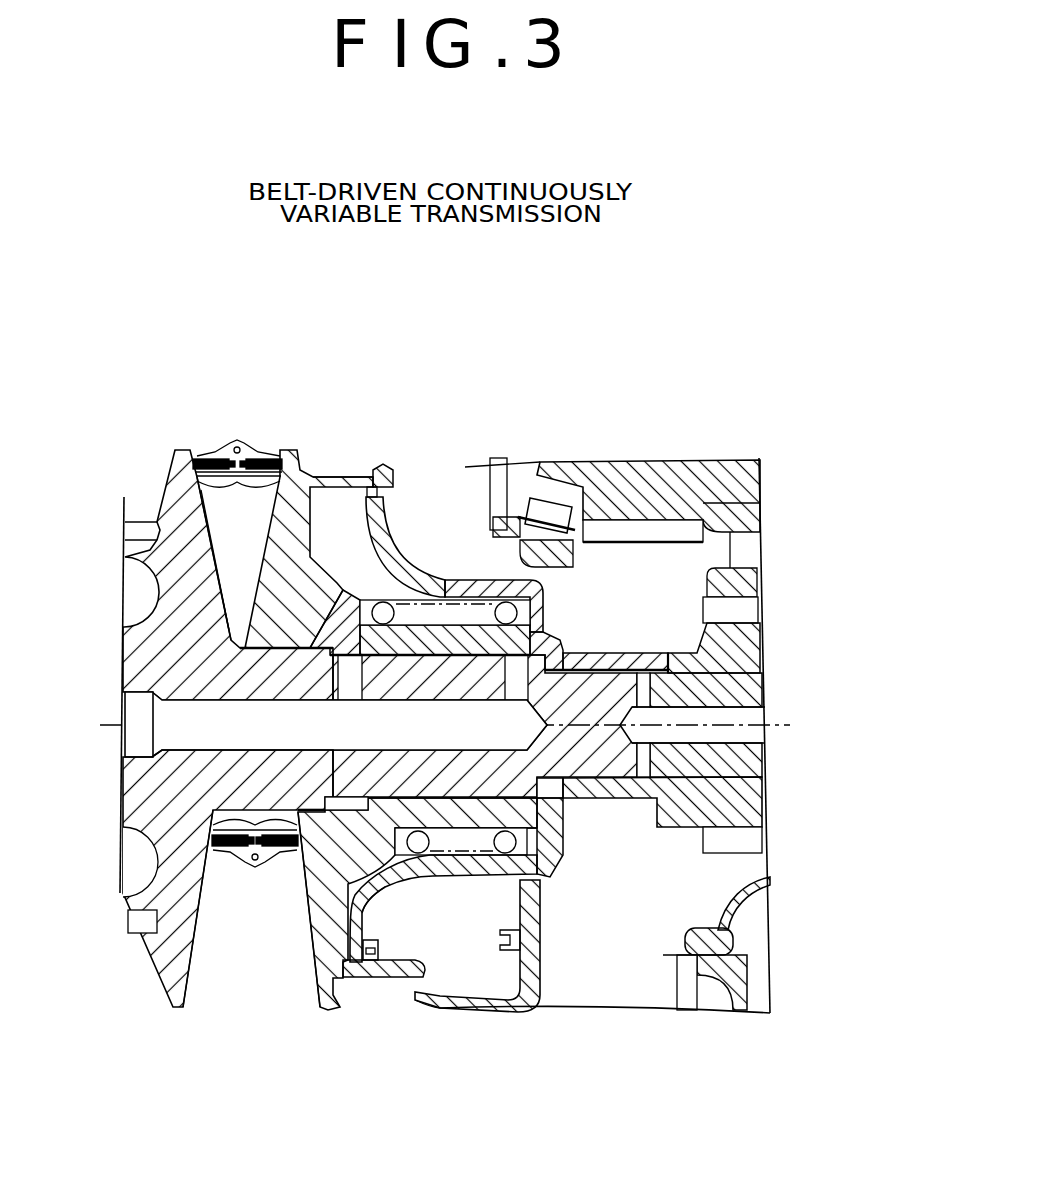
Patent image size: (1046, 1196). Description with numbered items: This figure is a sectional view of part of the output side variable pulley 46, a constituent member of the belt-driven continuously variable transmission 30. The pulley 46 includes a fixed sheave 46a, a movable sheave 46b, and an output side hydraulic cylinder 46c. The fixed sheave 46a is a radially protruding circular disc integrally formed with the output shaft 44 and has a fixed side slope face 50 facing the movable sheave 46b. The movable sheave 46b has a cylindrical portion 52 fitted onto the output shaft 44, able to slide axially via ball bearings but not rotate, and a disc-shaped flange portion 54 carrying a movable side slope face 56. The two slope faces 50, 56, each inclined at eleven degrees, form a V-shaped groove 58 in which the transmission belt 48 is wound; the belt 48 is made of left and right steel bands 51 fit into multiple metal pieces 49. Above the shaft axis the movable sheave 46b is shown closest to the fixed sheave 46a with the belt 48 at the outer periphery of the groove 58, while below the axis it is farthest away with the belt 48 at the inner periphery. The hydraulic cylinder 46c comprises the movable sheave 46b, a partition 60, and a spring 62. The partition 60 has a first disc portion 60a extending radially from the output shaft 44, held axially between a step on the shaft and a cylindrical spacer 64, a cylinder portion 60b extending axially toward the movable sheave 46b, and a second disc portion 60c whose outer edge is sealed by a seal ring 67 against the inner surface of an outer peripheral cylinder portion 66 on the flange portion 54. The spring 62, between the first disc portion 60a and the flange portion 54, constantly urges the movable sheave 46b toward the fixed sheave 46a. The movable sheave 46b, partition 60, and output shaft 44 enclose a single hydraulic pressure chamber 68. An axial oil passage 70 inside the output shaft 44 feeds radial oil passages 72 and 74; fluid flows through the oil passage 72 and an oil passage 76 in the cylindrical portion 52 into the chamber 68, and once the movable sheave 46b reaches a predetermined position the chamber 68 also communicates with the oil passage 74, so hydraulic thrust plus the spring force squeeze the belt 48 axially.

The belt-driven continuously variable transmission 30 is at (405, 310).
The output shaft 44 is at (745, 690).
The output side variable pulley 46 is at (311, 360).
The fixed sheave 46a is at (170, 920).
The movable sheave 46b is at (303, 981).
The output side hydraulic cylinder 46c is at (416, 537).
The transmission belt 48 is at (236, 418).
The metal pieces 49 is at (250, 452).
The fixed side slope face 50 is at (195, 958).
The steel bands 51 is at (200, 510).
The cylindrical portion 52 is at (463, 632).
The flange portion 54 is at (330, 940).
The movable side slope face 56 is at (303, 895).
The V-shaped groove 58 is at (217, 513).
The partition 60 is at (466, 895).
The first disc portion 60a is at (560, 823).
The cylinder portion 60b is at (438, 878).
The second disc portion 60c is at (370, 960).
The spring 62 is at (542, 870).
The cylindrical spacer 64 is at (642, 802).
The outer peripheral cylinder portion 66 is at (355, 487).
The seal ring 67 is at (388, 482).
The hydraulic pressure chamber 68 is at (395, 580).
The oil passage 70 is at (152, 743).
The oil passage 72 is at (350, 712).
The oil passage 74 is at (557, 637).
The oil passage 76 is at (345, 655).